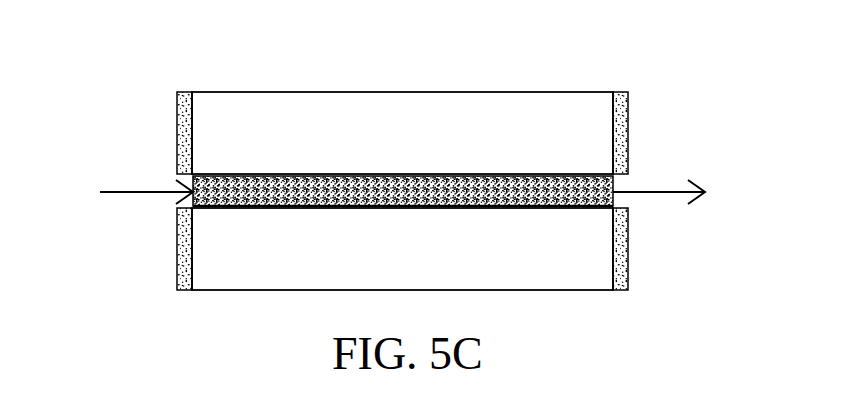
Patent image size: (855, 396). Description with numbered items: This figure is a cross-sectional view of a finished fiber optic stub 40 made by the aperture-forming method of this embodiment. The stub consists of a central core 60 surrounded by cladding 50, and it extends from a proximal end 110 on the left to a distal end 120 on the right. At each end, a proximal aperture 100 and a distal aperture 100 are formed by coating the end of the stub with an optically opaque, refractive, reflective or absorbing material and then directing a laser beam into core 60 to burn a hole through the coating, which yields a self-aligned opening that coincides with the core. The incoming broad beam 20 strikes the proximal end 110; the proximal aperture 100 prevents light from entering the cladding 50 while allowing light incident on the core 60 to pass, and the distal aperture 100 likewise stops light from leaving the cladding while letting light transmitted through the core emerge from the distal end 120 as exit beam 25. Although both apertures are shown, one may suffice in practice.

The broad beam 20 is at (132, 194).
The exit beam 25 is at (677, 194).
The fiber optic stub 40 is at (403, 82).
The cladding 50 is at (528, 122).
The core 60 is at (384, 208).
The aperture 100 is at (181, 92).
The proximal end 110 is at (134, 123).
The distal end 120 is at (672, 128).